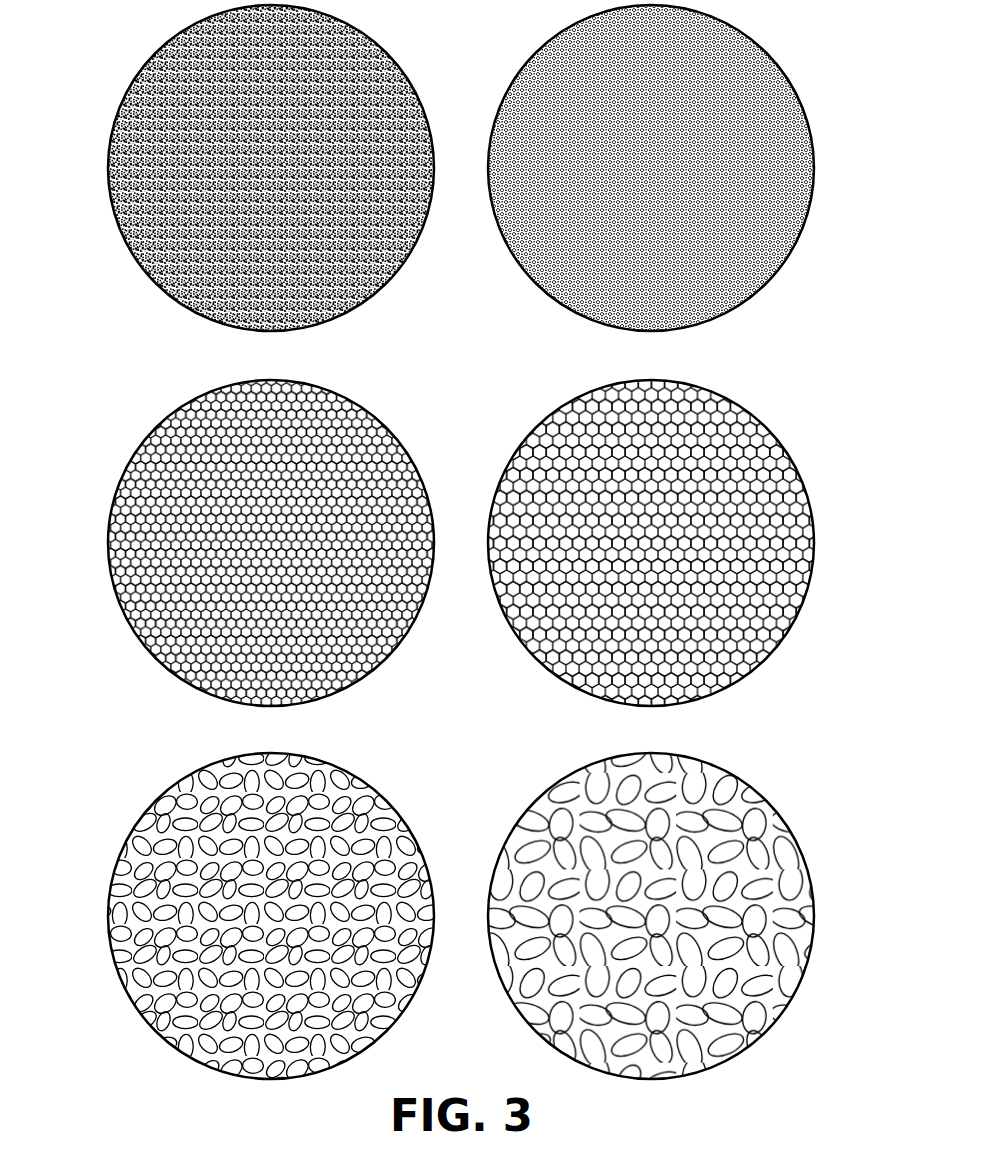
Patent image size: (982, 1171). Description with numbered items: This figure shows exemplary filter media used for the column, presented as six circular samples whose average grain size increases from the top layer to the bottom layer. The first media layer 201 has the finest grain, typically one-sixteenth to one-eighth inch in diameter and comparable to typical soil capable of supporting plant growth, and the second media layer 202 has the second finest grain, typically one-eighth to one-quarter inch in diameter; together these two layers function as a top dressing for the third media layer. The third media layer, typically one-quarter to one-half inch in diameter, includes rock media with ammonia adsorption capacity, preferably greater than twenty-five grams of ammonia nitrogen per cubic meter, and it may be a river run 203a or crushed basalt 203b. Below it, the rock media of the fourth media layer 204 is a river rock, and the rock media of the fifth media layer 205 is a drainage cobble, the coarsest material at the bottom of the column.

The first media layer 201 is at (108, 172).
The second media layer 202 is at (814, 170).
The river run rock media 203a is at (108, 546).
The crushed basalt rock media 203b is at (814, 546).
The fourth media layer 204 is at (108, 921).
The fifth media layer 205 is at (814, 919).